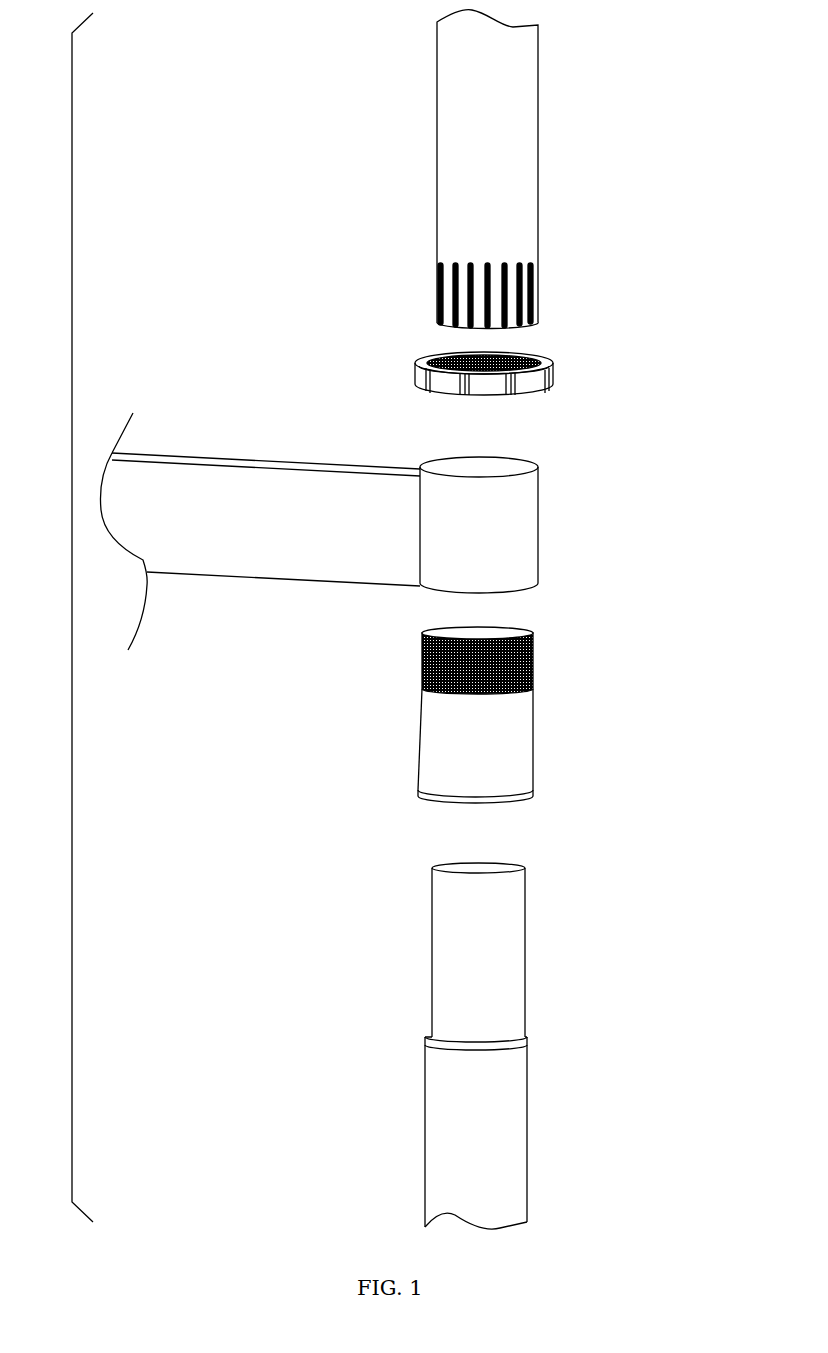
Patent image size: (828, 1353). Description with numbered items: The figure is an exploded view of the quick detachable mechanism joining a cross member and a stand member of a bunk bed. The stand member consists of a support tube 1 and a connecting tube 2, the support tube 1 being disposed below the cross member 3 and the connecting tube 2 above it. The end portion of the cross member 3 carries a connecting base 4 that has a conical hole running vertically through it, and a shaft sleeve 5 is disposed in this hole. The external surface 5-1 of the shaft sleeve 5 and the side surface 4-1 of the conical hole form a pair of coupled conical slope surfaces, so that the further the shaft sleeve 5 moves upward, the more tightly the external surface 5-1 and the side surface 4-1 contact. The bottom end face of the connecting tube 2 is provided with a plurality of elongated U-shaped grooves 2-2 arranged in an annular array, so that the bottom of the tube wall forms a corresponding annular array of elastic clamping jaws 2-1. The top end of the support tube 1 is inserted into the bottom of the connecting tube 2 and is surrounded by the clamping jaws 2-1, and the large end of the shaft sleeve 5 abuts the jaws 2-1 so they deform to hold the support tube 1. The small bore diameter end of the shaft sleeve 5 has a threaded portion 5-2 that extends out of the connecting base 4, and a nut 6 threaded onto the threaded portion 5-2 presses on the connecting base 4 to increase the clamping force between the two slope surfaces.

The support tube 1 is at (500, 973).
The connecting tube 2 is at (555, 178).
The elastic clamping jaws 2-1 is at (525, 311).
The grooves 2-2 is at (505, 312).
The cross member 3 is at (223, 552).
The connecting base 4 is at (544, 504).
The side surface of the conical hole 4-1 is at (467, 465).
The shaft sleeve 5 is at (470, 736).
The external surface of the shaft sleeve 5-1 is at (512, 767).
The threaded portion 5-2 is at (421, 652).
The nut 6 is at (423, 358).